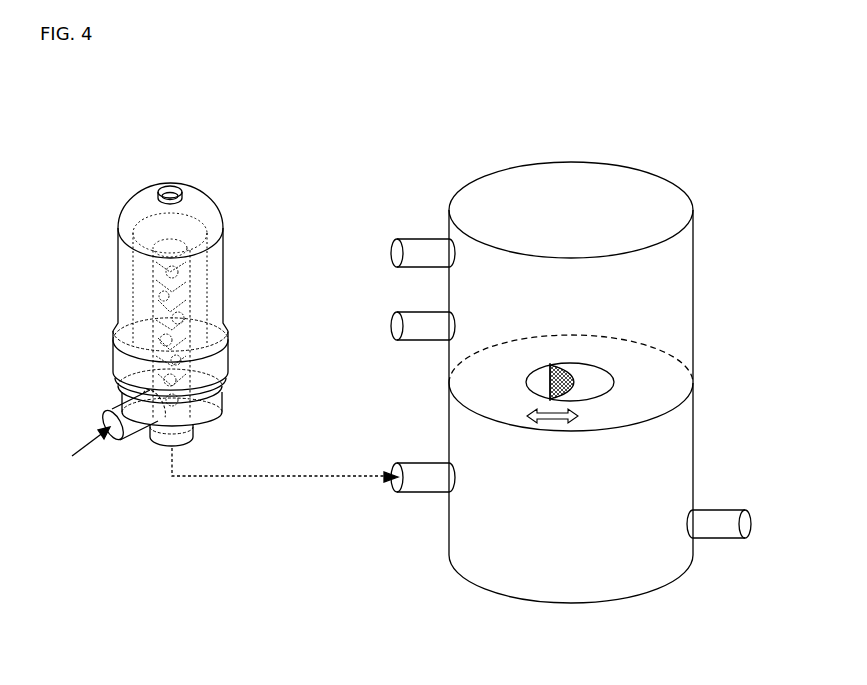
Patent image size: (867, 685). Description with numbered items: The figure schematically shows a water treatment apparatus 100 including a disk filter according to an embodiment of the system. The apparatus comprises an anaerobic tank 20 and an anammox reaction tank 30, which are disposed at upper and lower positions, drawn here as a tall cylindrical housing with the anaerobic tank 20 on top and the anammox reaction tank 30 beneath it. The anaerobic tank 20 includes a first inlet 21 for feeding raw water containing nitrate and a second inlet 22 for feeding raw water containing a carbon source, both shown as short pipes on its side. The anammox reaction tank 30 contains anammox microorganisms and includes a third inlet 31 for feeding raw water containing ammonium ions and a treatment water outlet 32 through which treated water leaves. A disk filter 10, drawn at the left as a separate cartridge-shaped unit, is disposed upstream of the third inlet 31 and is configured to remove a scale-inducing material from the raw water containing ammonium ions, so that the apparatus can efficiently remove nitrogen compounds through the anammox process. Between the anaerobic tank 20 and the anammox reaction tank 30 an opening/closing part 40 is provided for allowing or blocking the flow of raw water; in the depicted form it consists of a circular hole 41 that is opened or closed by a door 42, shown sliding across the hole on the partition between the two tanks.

The disk filter 10 is at (218, 184).
The water treatment apparatus 100 is at (696, 118).
The anaerobic tank 20 is at (688, 241).
The first inlet 21 is at (427, 251).
The second inlet 22 is at (409, 328).
The anammox reaction tank 30 is at (688, 434).
The third inlet 31 is at (417, 468).
The treatment water outlet 32 is at (723, 531).
The opening/closing part 40 is at (751, 287).
The circular hole 41 is at (540, 375).
The door 42 is at (587, 375).